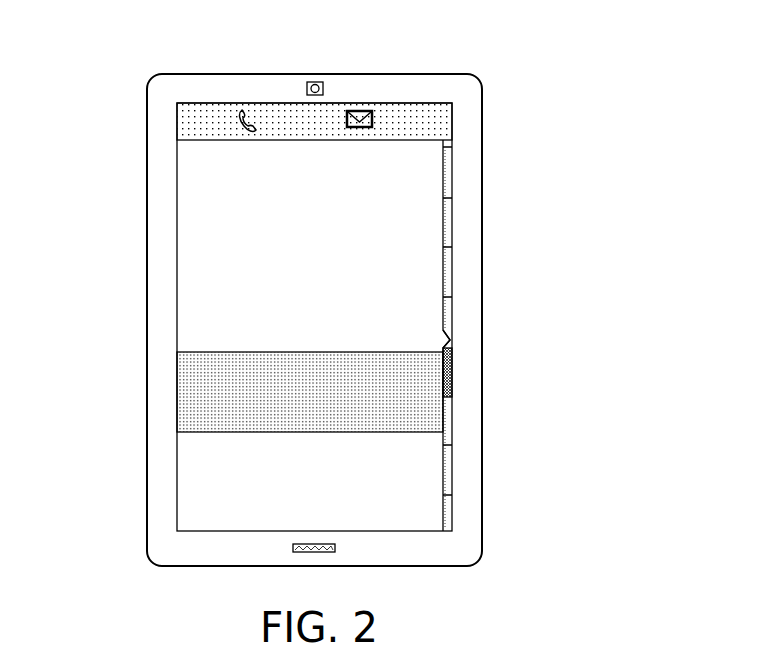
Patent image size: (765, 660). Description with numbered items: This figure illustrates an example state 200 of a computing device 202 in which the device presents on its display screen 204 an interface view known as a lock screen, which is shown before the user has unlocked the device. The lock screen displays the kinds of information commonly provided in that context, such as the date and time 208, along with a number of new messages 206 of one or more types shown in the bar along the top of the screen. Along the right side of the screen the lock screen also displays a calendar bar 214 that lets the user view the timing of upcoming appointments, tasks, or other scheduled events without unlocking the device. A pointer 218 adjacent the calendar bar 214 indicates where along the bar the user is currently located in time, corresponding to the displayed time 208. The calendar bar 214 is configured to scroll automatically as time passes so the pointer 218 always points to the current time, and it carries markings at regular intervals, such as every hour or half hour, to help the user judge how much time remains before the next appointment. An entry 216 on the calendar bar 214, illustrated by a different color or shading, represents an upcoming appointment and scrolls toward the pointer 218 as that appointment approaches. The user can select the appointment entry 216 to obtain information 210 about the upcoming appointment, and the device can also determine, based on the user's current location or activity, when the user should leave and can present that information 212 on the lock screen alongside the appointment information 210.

The state 200 is at (657, 110).
The computing device 202 is at (190, 74).
The display screen 204 is at (177, 186).
The status bar 206 is at (421, 120).
The date and time 208 is at (190, 282).
The information about the upcoming appointment 210 is at (175, 397).
The information on when the user should leave 212 is at (188, 445).
The calendar bar 214 is at (455, 225).
The pointer 218 is at (452, 330).
The entry 216 is at (457, 378).